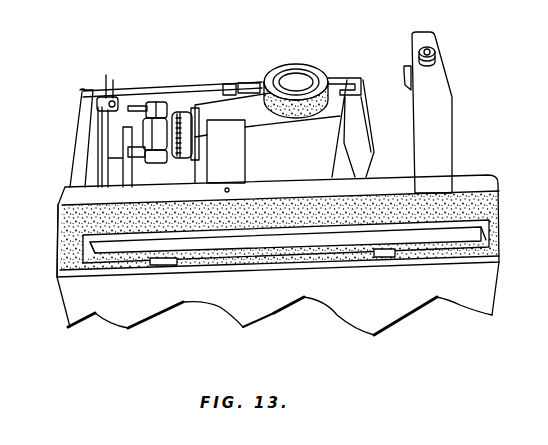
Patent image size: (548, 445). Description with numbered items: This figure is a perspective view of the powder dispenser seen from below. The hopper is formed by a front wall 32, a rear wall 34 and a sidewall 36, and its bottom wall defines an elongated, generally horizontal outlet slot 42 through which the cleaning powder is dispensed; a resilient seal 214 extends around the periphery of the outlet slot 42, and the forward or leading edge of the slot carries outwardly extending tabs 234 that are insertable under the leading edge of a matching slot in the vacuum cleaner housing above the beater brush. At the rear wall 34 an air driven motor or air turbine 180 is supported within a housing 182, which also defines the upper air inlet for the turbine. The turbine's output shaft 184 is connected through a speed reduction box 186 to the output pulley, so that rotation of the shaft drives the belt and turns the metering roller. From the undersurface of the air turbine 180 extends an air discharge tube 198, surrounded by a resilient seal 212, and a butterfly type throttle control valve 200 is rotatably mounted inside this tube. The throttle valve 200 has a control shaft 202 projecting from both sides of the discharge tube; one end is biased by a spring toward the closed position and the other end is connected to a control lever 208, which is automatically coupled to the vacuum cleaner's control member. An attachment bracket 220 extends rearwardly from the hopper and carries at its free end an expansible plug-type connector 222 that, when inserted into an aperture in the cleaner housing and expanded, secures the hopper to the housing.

The front wall 32 is at (437, 297).
The rear wall 34 is at (404, 185).
The sidewall 36 is at (52, 263).
The outlet slot 42 is at (467, 234).
The air turbine 180 is at (235, 110).
The housing 182 is at (362, 103).
The output shaft 184 is at (172, 120).
The speed reduction box 186 is at (138, 110).
The air discharge tube 198 is at (306, 82).
The throttle control valve 200 is at (292, 80).
The control shaft 202 is at (190, 87).
The control lever 208 is at (107, 78).
The resilient seal 212 is at (304, 103).
The resilient seal 214 is at (77, 213).
The attachment bracket 220 is at (467, 91).
The expansible plug-type connector 222 is at (432, 57).
The tab 234 is at (167, 264).